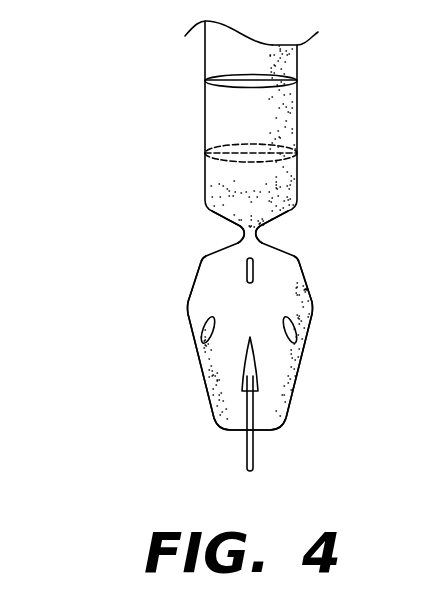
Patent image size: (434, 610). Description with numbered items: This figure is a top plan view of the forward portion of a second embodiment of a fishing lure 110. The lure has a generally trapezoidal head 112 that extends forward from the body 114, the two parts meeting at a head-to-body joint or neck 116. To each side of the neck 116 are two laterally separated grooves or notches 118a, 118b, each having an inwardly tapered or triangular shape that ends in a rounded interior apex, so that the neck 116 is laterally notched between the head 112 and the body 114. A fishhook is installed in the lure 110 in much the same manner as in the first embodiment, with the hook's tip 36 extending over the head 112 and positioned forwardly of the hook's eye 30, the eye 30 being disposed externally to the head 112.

The lure 110 is at (113, 64).
The head 112 is at (202, 362).
The body 114 is at (205, 112).
The neck 116 is at (250, 227).
The notch 118a is at (283, 233).
The notch 118b is at (217, 233).
The eye 30 is at (253, 283).
The tip 36 is at (255, 361).